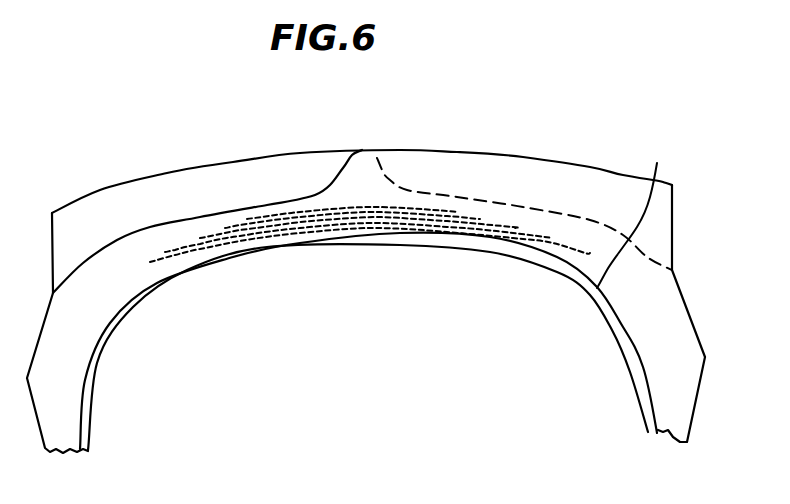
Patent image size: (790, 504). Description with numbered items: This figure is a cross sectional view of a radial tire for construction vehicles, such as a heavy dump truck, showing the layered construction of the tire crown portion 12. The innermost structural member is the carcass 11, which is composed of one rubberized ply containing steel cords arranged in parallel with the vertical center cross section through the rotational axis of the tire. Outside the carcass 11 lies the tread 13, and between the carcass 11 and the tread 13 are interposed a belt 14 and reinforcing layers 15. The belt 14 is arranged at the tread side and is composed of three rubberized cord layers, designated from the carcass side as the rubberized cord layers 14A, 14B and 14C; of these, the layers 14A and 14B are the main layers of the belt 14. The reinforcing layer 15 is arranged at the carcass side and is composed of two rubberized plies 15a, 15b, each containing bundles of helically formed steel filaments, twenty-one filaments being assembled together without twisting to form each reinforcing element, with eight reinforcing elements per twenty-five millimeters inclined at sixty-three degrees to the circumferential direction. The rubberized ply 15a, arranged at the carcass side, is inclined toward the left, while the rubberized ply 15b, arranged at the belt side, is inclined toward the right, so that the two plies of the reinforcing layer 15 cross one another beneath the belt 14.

The carcass 11 is at (651, 284).
The tire crown portion 12 is at (567, 163).
The tread 13 is at (460, 177).
The belt 14 is at (345, 164).
The rubberized cord layer 14A is at (317, 216).
The rubberized cord layer 14B is at (277, 217).
The rubberized cord layer 14C is at (260, 215).
The reinforcing layer 15 is at (132, 265).
The rubberized ply 15a is at (191, 243).
The rubberized ply 15b is at (165, 257).